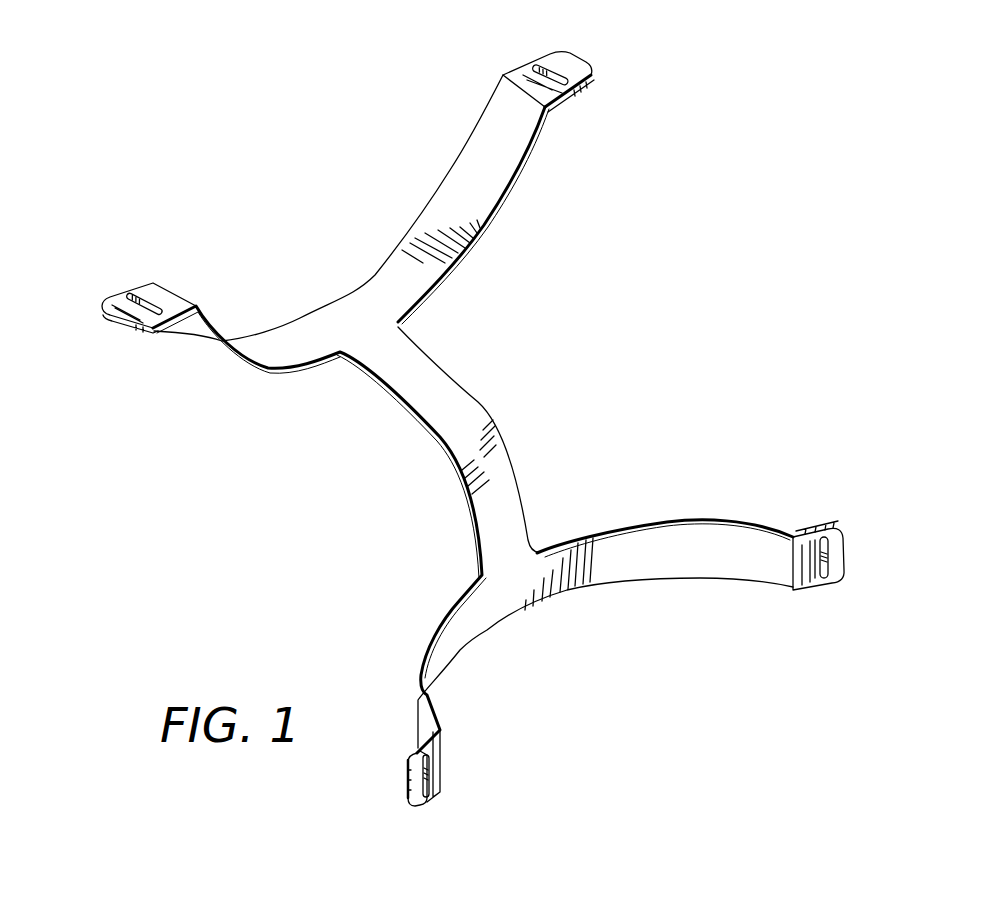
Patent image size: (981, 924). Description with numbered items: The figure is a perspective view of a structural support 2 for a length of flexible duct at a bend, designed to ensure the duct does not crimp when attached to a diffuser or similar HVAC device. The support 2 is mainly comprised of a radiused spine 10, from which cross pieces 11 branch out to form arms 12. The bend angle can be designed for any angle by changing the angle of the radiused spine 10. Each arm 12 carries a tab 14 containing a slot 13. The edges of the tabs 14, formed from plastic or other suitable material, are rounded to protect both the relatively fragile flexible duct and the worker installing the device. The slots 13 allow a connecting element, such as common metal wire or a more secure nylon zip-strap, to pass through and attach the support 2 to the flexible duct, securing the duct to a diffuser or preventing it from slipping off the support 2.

The structural support 2 is at (346, 148).
The radiused spine 10 is at (463, 441).
The cross piece 11 is at (372, 336).
The arm 12 is at (274, 340).
The slot 13 is at (569, 82).
The tab 14 is at (552, 53).